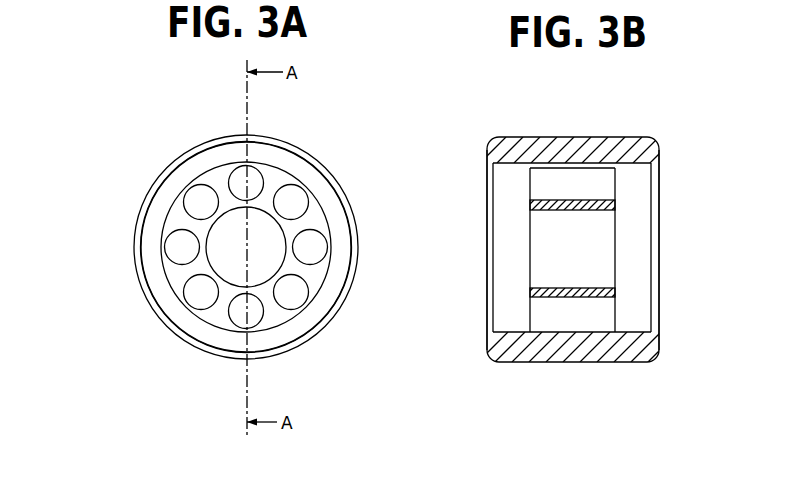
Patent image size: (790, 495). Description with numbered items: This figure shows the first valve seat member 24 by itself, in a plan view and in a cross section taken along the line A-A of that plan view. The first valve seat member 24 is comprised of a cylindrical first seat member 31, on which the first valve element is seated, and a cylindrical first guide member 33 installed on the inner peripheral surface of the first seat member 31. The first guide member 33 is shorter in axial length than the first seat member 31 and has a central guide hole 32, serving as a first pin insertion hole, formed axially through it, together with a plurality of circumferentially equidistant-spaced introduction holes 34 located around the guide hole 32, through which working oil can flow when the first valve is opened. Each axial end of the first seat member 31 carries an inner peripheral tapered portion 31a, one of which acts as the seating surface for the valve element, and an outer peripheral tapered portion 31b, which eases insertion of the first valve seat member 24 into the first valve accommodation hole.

In FIG. 3A, the first valve seat member 24 is at (168, 150).
In FIG. 3B, the first valve seat member 24 is at (661, 133).
In FIG. 3A, the first seat member 31 is at (145, 297).
In FIG. 3B, the first seat member 31 is at (570, 138).
In FIG. 3B, the inner peripheral tapered portion 31a is at (488, 339).
In FIG. 3A, the outer peripheral tapered portion 31b is at (140, 198).
In FIG. 3B, the outer peripheral tapered portion 31b is at (643, 362).
In FIG. 3A, the central guide hole 32 is at (278, 280).
In FIG. 3A, the first guide member 33 is at (280, 178).
In FIG. 3B, the first guide member 33 is at (563, 350).
In FIG. 3A, the introduction holes 34 is at (178, 258).
In FIG. 3B, the introduction holes 34 is at (595, 172).